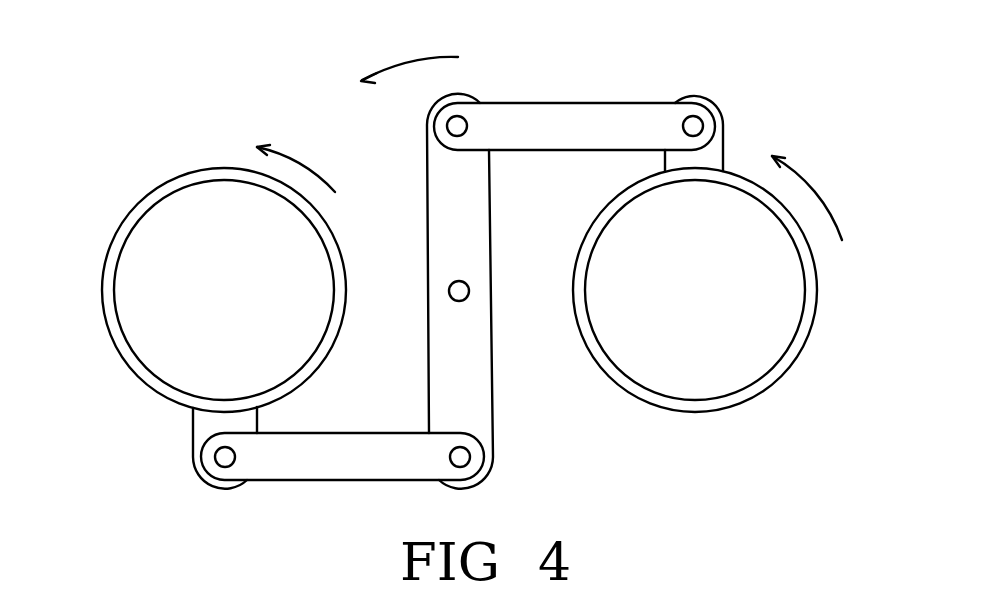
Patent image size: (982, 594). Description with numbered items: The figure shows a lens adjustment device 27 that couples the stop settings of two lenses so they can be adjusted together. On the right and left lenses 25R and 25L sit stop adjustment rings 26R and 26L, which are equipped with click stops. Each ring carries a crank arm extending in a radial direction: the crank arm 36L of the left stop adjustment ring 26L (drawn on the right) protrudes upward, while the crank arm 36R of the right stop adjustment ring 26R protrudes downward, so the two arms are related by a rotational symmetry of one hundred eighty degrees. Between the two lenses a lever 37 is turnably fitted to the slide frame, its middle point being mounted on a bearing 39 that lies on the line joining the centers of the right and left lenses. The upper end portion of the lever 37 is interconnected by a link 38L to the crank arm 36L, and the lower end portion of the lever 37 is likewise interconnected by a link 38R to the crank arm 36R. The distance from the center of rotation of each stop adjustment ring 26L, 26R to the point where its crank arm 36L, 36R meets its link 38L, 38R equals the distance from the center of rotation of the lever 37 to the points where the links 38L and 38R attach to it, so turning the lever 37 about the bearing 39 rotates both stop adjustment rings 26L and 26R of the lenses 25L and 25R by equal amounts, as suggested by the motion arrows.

The lens adjustment device 27 is at (323, 132).
The right lens 25R is at (163, 352).
The left lens 25L is at (757, 357).
The right stop adjustment ring 26R is at (113, 342).
The left stop adjustment ring 26L is at (811, 336).
The right crank arm 36R is at (192, 440).
The left crank arm 36L is at (725, 148).
The lever 37 is at (443, 188).
The right link 38R is at (324, 465).
The left link 38L is at (554, 115).
The bearing 39 is at (466, 284).